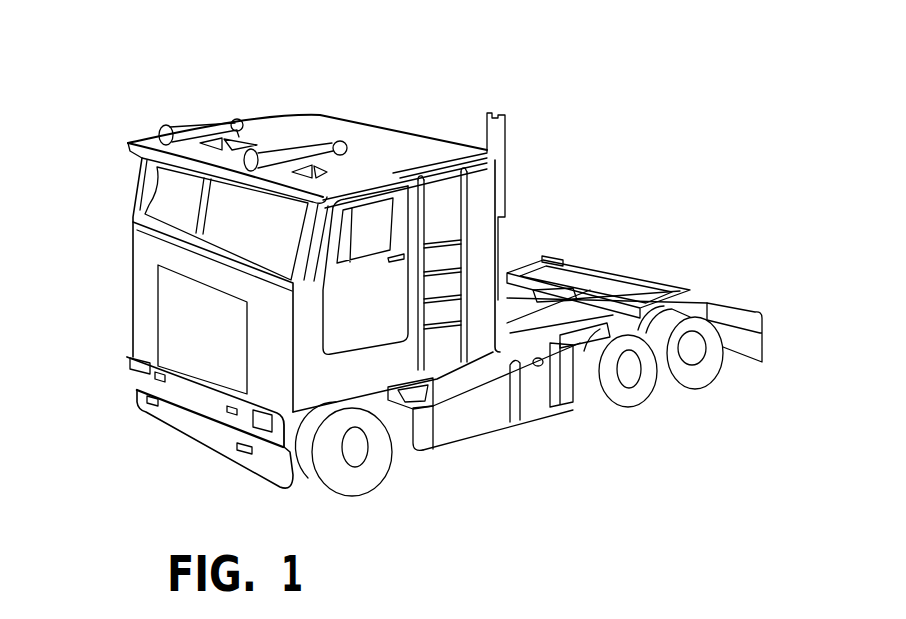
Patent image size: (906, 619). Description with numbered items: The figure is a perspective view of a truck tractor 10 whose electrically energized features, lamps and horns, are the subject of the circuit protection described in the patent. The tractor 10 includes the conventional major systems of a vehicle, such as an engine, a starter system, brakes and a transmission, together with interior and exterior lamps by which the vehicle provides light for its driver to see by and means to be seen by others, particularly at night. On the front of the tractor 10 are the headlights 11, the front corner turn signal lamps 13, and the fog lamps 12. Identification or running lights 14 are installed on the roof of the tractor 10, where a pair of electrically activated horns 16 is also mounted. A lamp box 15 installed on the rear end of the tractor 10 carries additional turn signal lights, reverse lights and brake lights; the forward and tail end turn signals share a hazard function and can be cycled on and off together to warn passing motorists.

The truck tractor 10 is at (415, 77).
The headlights 11 is at (131, 364).
The fog lamps 12 is at (148, 407).
The front corner turn signal lamps 13 is at (166, 377).
The identification or running lights 14 is at (244, 147).
The lamp box 15 is at (742, 308).
The electrically activated horns 16 is at (175, 127).